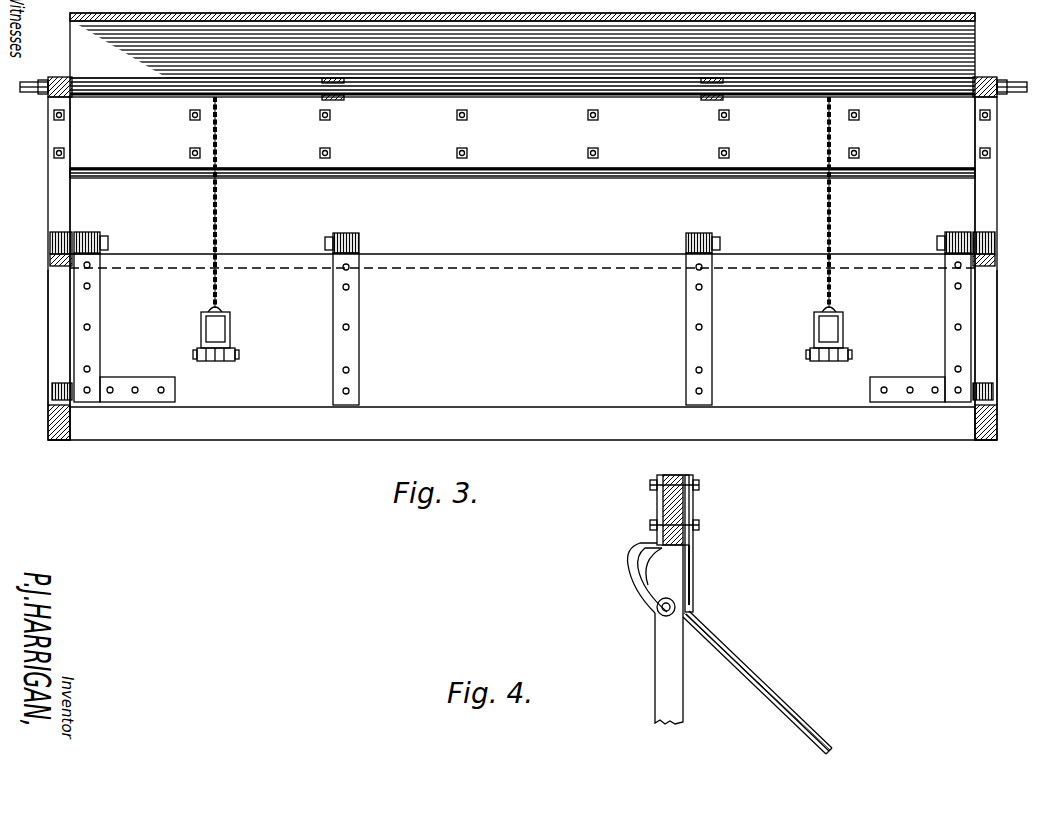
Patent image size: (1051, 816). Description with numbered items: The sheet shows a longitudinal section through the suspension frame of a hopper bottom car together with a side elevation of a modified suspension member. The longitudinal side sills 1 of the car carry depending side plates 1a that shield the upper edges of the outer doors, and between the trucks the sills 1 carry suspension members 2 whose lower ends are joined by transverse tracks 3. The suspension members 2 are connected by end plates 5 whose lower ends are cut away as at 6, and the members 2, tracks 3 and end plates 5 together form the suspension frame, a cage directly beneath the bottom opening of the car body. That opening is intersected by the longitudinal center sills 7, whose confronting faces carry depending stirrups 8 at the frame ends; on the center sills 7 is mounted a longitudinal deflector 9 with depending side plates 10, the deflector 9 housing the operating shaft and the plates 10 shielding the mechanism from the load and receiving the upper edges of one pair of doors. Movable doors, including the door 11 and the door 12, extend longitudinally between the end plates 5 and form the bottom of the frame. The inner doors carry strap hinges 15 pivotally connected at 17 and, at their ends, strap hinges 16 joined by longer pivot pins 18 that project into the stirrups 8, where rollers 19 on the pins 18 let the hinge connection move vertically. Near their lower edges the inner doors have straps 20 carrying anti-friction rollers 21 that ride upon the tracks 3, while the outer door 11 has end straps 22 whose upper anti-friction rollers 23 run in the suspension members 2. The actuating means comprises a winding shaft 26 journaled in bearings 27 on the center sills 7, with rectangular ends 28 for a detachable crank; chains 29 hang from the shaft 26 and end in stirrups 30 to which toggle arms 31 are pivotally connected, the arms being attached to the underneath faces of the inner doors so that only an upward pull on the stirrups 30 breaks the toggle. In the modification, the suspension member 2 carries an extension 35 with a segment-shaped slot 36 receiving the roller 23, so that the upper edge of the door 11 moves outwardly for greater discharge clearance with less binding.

In FIG. 4, the longitudinal side sill 1 is at (675, 500).
In FIG. 4, the depending side plate 1a is at (693, 577).
In FIG. 4, the suspension member 2 is at (670, 687).
In FIG. 3, the transverse track 3 is at (48, 418).
In FIG. 3, the end plate 5 is at (43, 305).
In FIG. 3, the cut-away portion 6 is at (58, 342).
In FIG. 3, the longitudinal center sill 7 is at (522, 144).
In FIG. 3, the depending stirrup 8 is at (53, 177).
In FIG. 3, the longitudinal deflector 9 is at (522, 45).
In FIG. 3, the depending side plate 10 is at (522, 228).
In FIG. 4, the movable door 11 is at (723, 648).
In FIG. 3, the movable door 12 is at (522, 337).
In FIG. 3, the strap hinge 15 is at (352, 307).
In FIG. 3, the strap hinge 16 is at (97, 308).
In FIG. 3, the pivotal connection 17 is at (367, 243).
In FIG. 3, the pivot pin 18 is at (108, 238).
In FIG. 3, the roller 19 is at (65, 230).
In FIG. 3, the strap 20 is at (118, 375).
In FIG. 3, the anti-friction roller 21 is at (60, 380).
In FIG. 4, the strap 22 is at (753, 698).
In FIG. 4, the anti-friction roller 23 is at (688, 613).
In FIG. 3, the winding shaft 26 is at (423, 97).
In FIG. 3, the bearing 27 is at (58, 76).
In FIG. 3, the shaped shaft end 28 is at (33, 97).
In FIG. 3, the chain 29 is at (219, 216).
In FIG. 3, the stirrup 30 is at (230, 320).
In FIG. 3, the toggle arm 31 is at (215, 362).
In FIG. 4, the extension 35 is at (623, 557).
In FIG. 4, the segment-shaped slot 36 is at (648, 577).